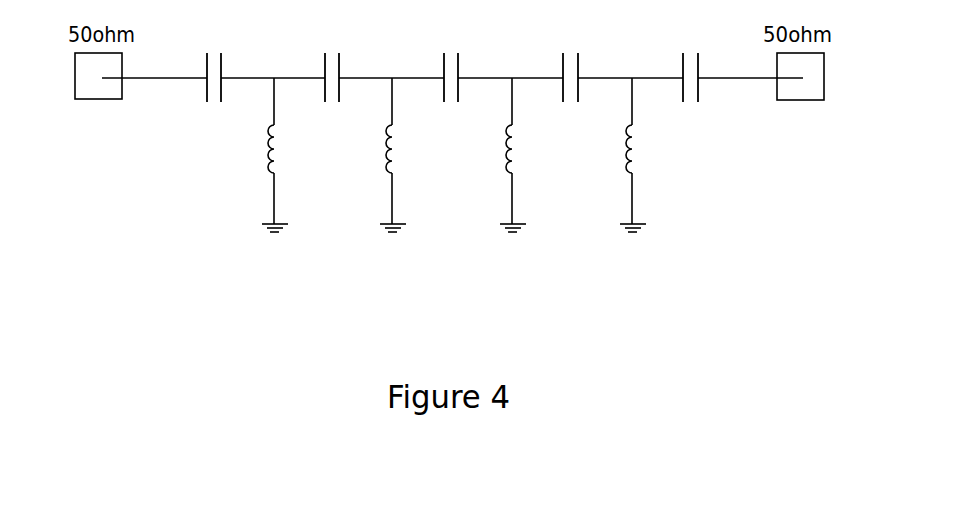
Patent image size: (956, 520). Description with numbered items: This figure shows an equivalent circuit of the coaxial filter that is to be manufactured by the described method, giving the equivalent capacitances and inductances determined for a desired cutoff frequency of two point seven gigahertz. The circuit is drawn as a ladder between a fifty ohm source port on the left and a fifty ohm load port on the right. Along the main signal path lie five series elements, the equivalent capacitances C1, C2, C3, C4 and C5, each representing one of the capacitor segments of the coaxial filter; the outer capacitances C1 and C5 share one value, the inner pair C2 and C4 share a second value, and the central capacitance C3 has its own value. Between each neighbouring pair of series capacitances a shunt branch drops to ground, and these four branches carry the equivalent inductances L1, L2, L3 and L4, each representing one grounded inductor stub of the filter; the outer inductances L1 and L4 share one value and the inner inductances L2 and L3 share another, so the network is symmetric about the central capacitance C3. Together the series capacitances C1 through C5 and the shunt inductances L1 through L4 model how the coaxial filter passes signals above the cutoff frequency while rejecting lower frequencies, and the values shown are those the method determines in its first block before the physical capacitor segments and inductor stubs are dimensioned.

The equivalent capacitance C1 is at (211, 77).
The equivalent capacitance C2 is at (337, 77).
The equivalent capacitance C3 is at (456, 77).
The equivalent capacitance C4 is at (575, 77).
The equivalent capacitance C5 is at (691, 77).
The equivalent inductance L1 is at (271, 172).
The equivalent inductance L2 is at (388, 172).
The equivalent inductance L3 is at (507, 172).
The equivalent inductance L4 is at (630, 172).